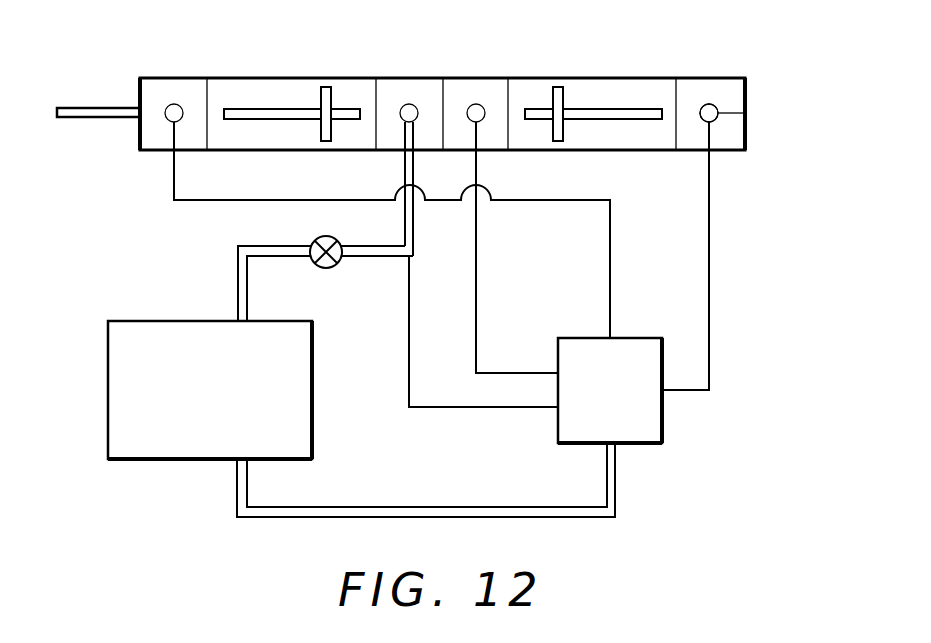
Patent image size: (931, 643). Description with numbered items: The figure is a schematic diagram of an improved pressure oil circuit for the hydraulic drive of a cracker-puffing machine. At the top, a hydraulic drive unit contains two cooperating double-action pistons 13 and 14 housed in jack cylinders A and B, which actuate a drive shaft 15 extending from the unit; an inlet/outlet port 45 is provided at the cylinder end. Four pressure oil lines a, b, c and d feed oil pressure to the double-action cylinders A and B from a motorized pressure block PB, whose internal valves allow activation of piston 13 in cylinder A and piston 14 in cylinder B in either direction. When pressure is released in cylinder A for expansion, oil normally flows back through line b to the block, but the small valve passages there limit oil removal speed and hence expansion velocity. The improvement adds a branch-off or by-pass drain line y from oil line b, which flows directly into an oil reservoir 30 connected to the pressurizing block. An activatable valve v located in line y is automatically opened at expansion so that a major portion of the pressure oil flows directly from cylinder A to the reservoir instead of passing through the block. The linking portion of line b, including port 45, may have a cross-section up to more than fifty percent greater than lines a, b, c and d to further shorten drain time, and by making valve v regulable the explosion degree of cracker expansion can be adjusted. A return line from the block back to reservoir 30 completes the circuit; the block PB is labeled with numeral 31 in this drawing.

The double-action piston 13 is at (334, 97).
The double-action piston 14 is at (552, 97).
The drive shaft 15 is at (97, 107).
The oil reservoir 30 is at (118, 377).
The control unit PB 31 is at (662, 420).
The inlet/outlet port 45 is at (745, 110).
The jack cylinder A is at (270, 78).
The jack cylinder B is at (595, 78).
The pressure oil line a is at (612, 268).
The pressure oil line b is at (407, 318).
The pressure oil line c is at (478, 303).
The pressure oil line d is at (712, 270).
The activatable valve v is at (313, 239).
The by-pass drain line y is at (235, 278).